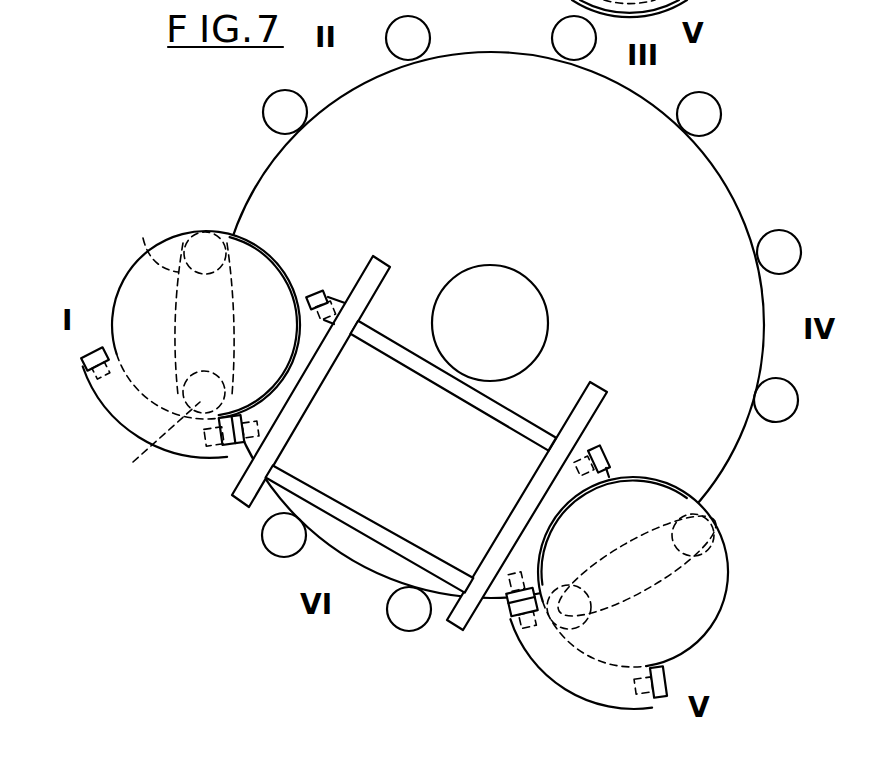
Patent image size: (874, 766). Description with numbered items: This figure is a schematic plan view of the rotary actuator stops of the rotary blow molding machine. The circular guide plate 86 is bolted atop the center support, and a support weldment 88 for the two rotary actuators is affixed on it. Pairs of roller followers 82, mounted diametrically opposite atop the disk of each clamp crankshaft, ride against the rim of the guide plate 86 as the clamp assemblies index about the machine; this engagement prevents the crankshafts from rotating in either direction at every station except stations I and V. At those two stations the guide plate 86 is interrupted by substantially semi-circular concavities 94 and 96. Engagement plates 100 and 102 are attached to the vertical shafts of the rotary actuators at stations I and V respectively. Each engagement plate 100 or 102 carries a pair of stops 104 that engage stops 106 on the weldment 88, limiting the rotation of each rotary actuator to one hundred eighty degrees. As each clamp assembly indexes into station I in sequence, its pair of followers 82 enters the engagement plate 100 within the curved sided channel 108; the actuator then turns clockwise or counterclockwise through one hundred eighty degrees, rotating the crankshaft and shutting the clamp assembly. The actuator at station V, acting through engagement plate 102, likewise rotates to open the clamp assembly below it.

The roller followers 82 is at (427, 27).
The guide plate 86 is at (713, 199).
The support weldment 88 is at (522, 422).
The semi-circular concavity 94 is at (267, 259).
The semi-circular concavity 96 is at (660, 487).
The engagement plate 100 is at (122, 283).
The engagement plate 102 is at (716, 592).
The stops 104 is at (80, 357).
The stops 106 is at (312, 290).
The curved sided channel 108 is at (148, 253).